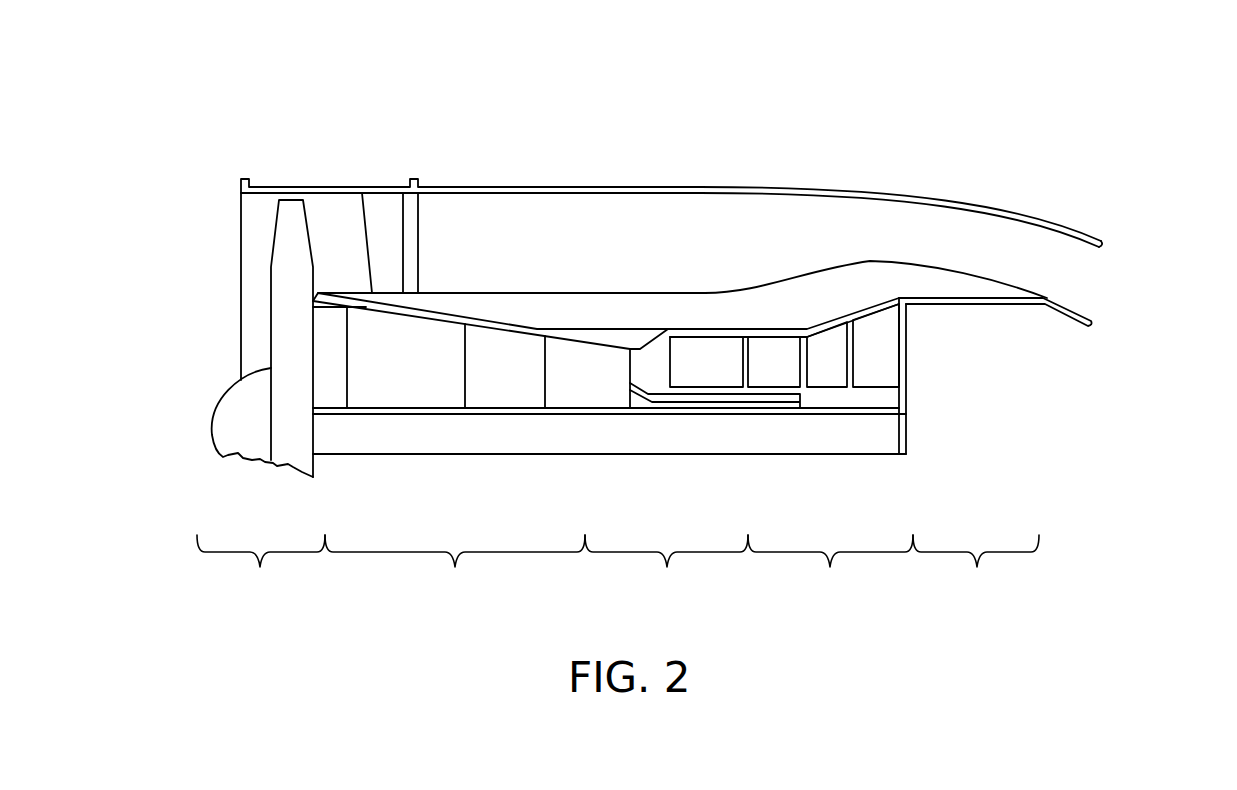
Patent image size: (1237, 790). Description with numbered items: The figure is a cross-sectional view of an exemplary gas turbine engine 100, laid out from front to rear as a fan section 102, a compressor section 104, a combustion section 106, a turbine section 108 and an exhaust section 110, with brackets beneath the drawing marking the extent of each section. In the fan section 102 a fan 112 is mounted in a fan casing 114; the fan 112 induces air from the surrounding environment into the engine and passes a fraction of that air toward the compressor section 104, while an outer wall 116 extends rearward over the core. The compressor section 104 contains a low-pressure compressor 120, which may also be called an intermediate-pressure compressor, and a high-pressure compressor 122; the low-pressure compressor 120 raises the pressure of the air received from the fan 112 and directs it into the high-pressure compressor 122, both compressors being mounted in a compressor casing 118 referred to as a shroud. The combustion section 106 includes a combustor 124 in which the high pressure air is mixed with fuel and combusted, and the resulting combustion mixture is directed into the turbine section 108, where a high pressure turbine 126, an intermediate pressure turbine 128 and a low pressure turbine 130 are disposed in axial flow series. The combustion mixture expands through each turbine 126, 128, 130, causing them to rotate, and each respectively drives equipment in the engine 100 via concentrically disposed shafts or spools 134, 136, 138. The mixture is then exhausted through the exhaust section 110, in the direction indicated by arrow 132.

The gas turbine engine 100 is at (452, 144).
The fan section 102 is at (261, 567).
The compressor section 104 is at (455, 567).
The combustion section 106 is at (666, 567).
The turbine section 108 is at (830, 567).
The exhaust section 110 is at (976, 567).
The fan 112 is at (283, 293).
The fan casing 114 is at (340, 186).
The nacelle / outer casing 116 is at (593, 206).
The compressor casing 118 is at (583, 333).
The low-pressure compressor 120 is at (413, 398).
The high-pressure compressor 122 is at (587, 398).
The combustor 124 is at (717, 348).
The high pressure turbine 126 is at (778, 350).
The intermediate pressure turbine 128 is at (833, 338).
The low pressure turbine 130 is at (888, 328).
The airflow direction 132 is at (1080, 384).
The shaft 134 is at (672, 394).
The shaft 136 is at (755, 410).
The shaft 138 is at (820, 443).